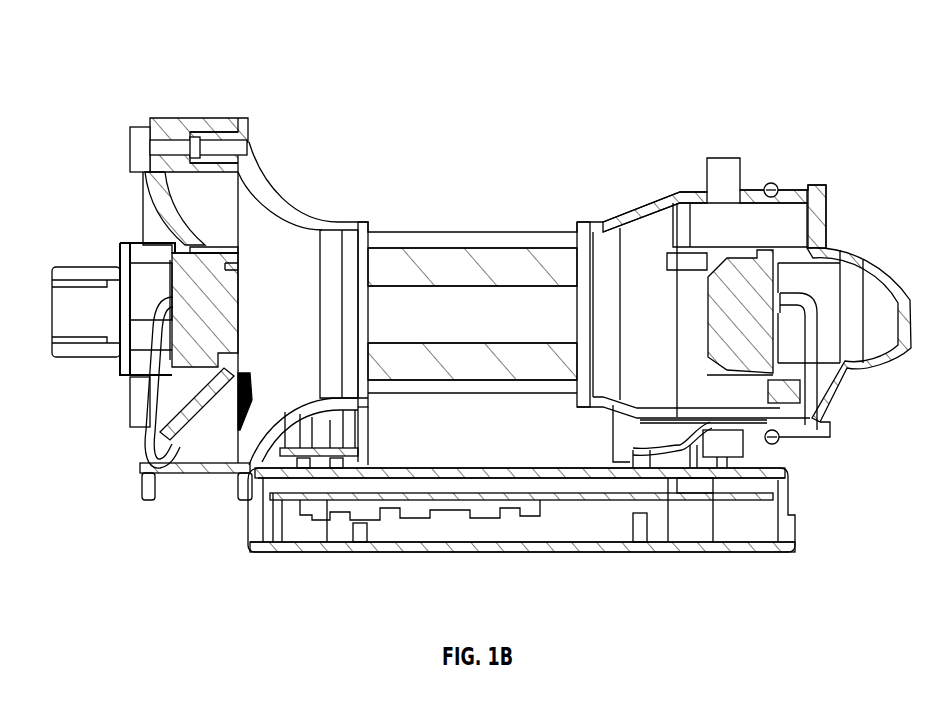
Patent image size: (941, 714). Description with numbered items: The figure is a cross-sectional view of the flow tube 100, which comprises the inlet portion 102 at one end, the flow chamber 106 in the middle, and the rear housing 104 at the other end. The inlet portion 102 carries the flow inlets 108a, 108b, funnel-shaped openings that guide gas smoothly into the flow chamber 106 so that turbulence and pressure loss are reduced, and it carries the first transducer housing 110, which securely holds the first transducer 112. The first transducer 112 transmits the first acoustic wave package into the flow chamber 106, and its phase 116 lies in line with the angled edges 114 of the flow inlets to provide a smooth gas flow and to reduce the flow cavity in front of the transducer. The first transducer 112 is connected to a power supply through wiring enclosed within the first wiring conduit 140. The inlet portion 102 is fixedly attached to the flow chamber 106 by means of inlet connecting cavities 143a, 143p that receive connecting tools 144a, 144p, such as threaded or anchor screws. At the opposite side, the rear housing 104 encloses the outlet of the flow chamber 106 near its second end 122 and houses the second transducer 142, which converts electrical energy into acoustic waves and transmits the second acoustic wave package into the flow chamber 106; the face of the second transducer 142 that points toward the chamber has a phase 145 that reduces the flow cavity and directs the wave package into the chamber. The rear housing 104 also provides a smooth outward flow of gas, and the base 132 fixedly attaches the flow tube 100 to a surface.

The flow tube 100 is at (97, 71).
The inlet portion 102 is at (188, 114).
The rear housing 104 is at (849, 241).
The flow chamber 106 is at (466, 206).
The flow inlet 108a is at (223, 206).
The flow inlet 108b is at (222, 455).
The first transducer housing 110 is at (112, 261).
The first transducer 112 is at (232, 310).
The angled edges 114 is at (238, 255).
The phase 116 is at (235, 270).
The second end 122 is at (689, 176).
The base 132 is at (787, 483).
The first wiring conduit 140 is at (142, 465).
The second transducer 142 is at (813, 290).
The inlet connecting cavity 143a is at (130, 130).
The inlet connecting cavity 143p is at (140, 428).
The connecting tool 144a is at (130, 160).
The connecting tool 144p is at (128, 398).
The phase 145 is at (712, 268).